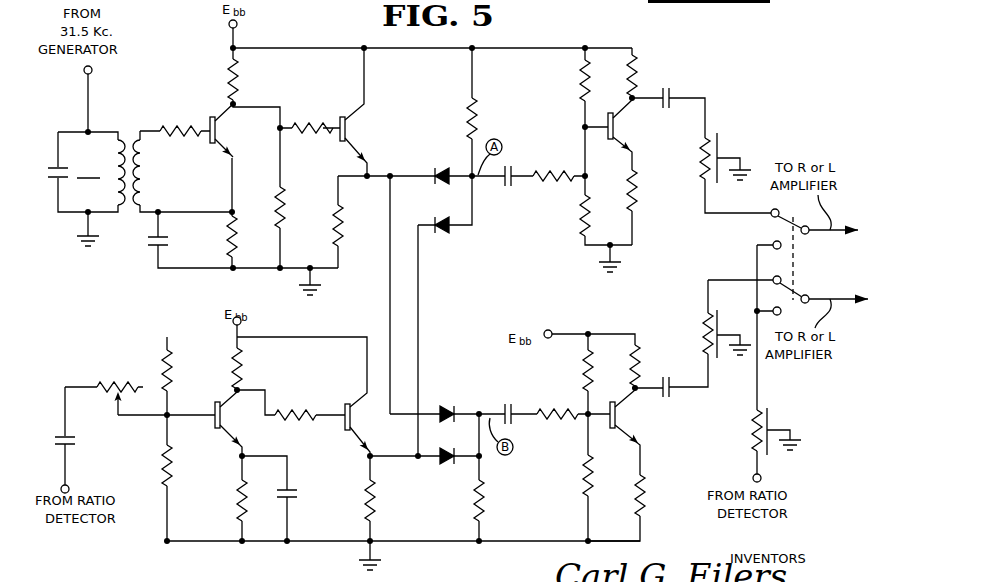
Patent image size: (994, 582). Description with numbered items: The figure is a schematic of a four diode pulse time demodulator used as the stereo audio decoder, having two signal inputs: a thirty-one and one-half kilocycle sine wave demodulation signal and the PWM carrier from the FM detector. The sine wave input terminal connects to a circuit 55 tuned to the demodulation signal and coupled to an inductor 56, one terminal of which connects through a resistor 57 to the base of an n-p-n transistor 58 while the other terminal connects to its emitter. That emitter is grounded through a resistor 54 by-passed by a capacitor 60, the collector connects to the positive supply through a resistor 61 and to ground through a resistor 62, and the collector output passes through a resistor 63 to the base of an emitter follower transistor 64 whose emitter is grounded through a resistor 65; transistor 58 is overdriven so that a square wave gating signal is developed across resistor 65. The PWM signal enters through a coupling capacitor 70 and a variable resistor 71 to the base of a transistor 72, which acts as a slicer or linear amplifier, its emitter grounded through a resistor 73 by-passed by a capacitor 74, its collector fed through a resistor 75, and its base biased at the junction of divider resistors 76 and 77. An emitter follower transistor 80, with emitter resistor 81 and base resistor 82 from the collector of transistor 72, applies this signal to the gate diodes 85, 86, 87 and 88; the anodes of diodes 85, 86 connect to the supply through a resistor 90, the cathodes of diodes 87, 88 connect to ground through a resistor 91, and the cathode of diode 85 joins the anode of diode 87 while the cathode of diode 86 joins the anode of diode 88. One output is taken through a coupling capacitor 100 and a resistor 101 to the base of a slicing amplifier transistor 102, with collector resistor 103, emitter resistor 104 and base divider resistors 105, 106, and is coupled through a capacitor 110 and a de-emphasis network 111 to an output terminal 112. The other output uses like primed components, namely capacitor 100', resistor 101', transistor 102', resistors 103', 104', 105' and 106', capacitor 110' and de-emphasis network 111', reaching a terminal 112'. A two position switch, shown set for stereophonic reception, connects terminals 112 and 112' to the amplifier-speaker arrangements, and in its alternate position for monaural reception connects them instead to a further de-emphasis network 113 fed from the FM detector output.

The resistor 54 is at (228, 240).
The tuned circuit 55 is at (74, 170).
The inductor 56 is at (152, 167).
The resistor 57 is at (150, 125).
The n-p-n transistor 58 is at (215, 130).
The capacitor 60 is at (148, 240).
The resistor 61 is at (238, 70).
The resistor 62 is at (283, 196).
The resistor 63 is at (330, 124).
The n-p-n transistor 64 is at (345, 129).
The resistor 65 is at (343, 220).
The coupling capacitor 70 is at (75, 440).
The variable resistor 71 is at (118, 380).
The n-p-n transistor 72 is at (221, 422).
The resistor 73 is at (240, 497).
The capacitor 74 is at (293, 492).
The resistor 75 is at (243, 358).
The resistor 76 is at (172, 360).
The resistor 77 is at (172, 458).
The n-p-n transistor 80 is at (350, 417).
The resistor 81 is at (375, 494).
The resistor 82 is at (316, 413).
The diode 85 is at (436, 170).
The diode 86 is at (445, 234).
The diode 87 is at (448, 406).
The diode 88 is at (454, 465).
The resistor 90 is at (477, 108).
The resistor 91 is at (482, 490).
The coupling capacitor 100 is at (503, 196).
The coupling capacitor 100' is at (502, 393).
The resistor 101 is at (552, 155).
The resistor 101' is at (552, 434).
The transistor 102 is at (644, 140).
The transistor 102' is at (639, 418).
The resistor 103 is at (652, 73).
The resistor 103' is at (659, 363).
The resistor 104 is at (651, 190).
The resistor 104' is at (661, 495).
The resistor 105 is at (562, 82).
The resistor 105' is at (561, 373).
The resistor 106 is at (561, 218).
The resistor 106' is at (562, 475).
The capacitor 110 is at (668, 116).
The capacitor 110' is at (696, 396).
The de-emphasis network 111 is at (731, 154).
The de-emphasis network 111' is at (709, 326).
The output terminal 112 is at (797, 215).
The output terminal 112' is at (820, 278).
The de-emphasis network 113 is at (756, 438).